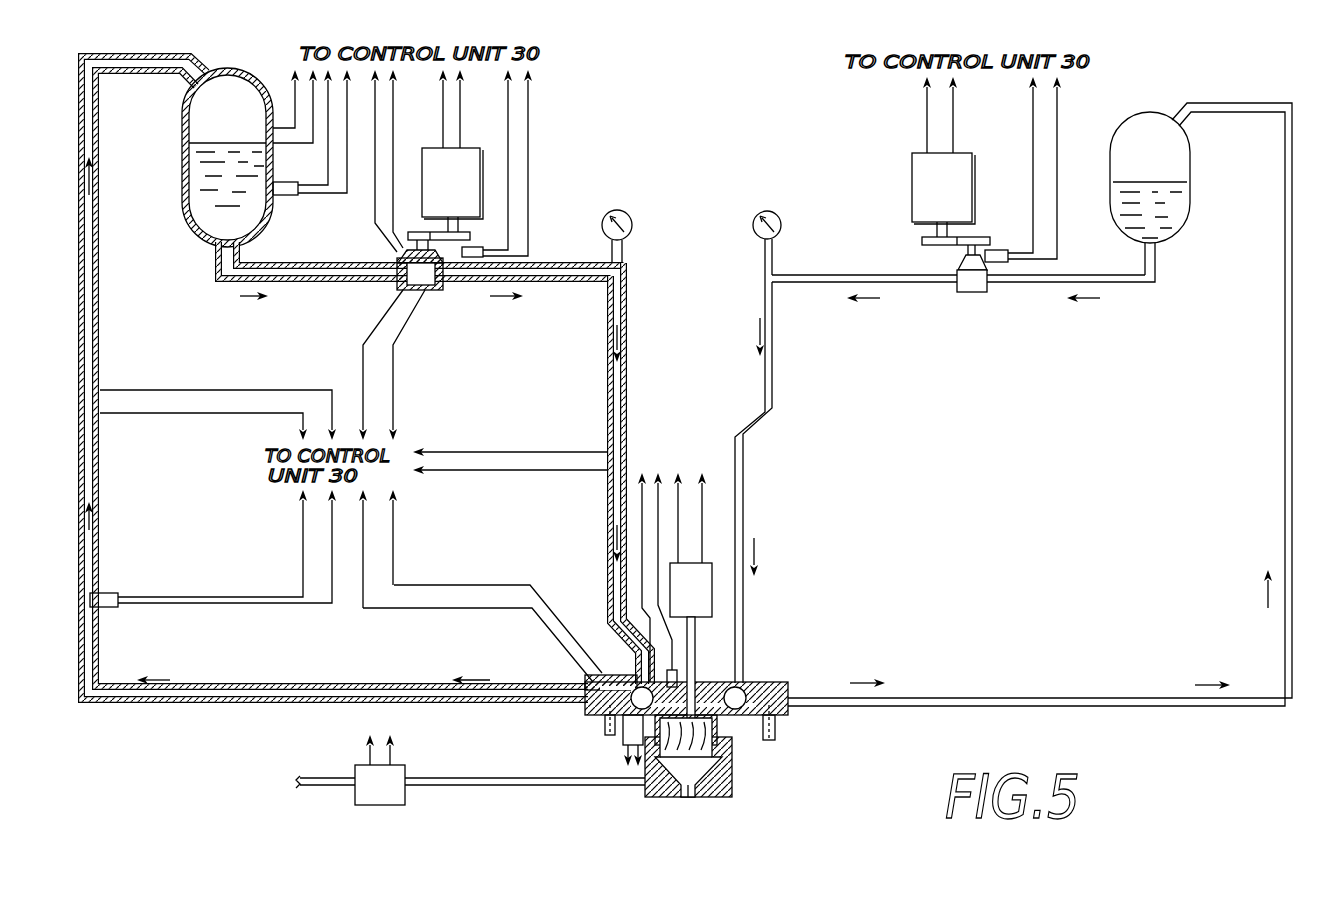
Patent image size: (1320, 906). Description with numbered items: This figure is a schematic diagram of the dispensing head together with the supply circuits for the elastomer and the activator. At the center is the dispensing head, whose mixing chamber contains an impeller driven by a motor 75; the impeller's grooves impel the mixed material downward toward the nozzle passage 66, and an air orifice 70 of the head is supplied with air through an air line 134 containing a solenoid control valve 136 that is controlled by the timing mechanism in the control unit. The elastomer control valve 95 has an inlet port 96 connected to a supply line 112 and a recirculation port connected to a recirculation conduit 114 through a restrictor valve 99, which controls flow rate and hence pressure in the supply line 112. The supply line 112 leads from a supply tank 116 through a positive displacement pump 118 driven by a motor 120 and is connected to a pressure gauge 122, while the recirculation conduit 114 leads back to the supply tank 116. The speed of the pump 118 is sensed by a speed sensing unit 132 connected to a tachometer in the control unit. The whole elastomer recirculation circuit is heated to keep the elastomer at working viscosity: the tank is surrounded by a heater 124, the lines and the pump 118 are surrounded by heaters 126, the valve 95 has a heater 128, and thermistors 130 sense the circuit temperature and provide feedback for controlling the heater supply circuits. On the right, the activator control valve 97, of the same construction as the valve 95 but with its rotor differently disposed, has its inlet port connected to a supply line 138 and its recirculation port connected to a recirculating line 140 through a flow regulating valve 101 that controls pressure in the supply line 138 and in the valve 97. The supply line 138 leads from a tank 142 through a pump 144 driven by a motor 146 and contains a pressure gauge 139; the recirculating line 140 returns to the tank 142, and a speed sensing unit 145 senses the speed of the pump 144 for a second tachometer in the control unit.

The nozzle passage 66 is at (690, 797).
The air orifice 70 is at (675, 797).
The motor 75 is at (707, 605).
The elastomer control valve 95 is at (590, 690).
The inlet port 96 is at (602, 676).
The activator control valve 97 is at (745, 690).
The restrictor valve 99 is at (605, 725).
The flow regulating valve 101 is at (775, 735).
The supply line 112 is at (630, 330).
The recirculation conduit 114 is at (100, 360).
The supply tank 116 is at (242, 131).
The positive displacement pump 118 is at (420, 288).
The motor 120 is at (476, 195).
The pressure gauge 122 is at (620, 210).
The heater 124 is at (268, 216).
The heaters 126 is at (628, 300).
The heater 128 is at (622, 740).
The thermistors 130 is at (295, 178).
The speed sensing unit 132 is at (478, 246).
The air line 134 is at (520, 786).
The solenoid control valve 136 is at (400, 799).
The supply line 138 is at (745, 462).
The pressure gauge 139 is at (780, 213).
The recirculating line 140 is at (955, 698).
The tank 142 is at (1172, 165).
The pump 144 is at (970, 294).
The speed sensing unit 145 is at (1000, 264).
The motor 146 is at (968, 205).